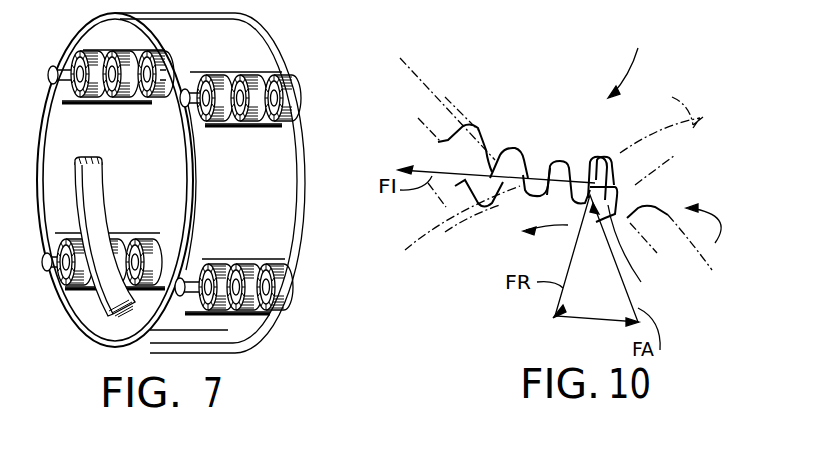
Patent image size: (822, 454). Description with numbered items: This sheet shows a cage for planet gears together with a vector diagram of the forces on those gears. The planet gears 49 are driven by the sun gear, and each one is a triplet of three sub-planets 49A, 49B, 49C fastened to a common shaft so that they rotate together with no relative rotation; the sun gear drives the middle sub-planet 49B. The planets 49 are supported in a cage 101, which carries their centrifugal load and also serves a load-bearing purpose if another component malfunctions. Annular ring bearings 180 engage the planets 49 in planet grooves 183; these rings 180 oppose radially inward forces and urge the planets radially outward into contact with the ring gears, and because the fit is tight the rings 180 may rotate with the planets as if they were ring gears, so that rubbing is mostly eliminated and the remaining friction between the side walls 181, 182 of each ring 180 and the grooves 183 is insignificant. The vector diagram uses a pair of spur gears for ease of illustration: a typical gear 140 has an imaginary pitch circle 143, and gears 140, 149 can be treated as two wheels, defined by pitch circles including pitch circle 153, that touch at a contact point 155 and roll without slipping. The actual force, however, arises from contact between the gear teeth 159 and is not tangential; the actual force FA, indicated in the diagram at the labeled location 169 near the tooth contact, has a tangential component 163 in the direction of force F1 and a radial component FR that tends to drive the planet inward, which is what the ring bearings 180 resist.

In FIG. 7, the planet gears 49 is at (280, 97).
In FIG. 7, the sub-planet 49A is at (217, 72).
In FIG. 7, the sub-planet 49B is at (258, 122).
In FIG. 7, the sub-planet 49C is at (283, 72).
In FIG. 7, the cage 101 is at (261, 216).
In FIG. 7, the annular ring bearings 180 is at (108, 300).
In FIG. 7, the side wall 181 is at (80, 208).
In FIG. 7, the side wall 182 is at (104, 186).
In FIG. 7, the planet grooves 183 is at (88, 110).
In FIG. 10, the gear 140 is at (703, 228).
In FIG. 10, the pitch circle 143 is at (712, 270).
In FIG. 10, the gear 149 is at (667, 157).
In FIG. 10, the pitch circle 153 is at (637, 79).
In FIG. 10, the contact point 155 is at (568, 190).
In FIG. 10, the gear teeth 159 is at (587, 163).
In FIG. 10, the tangential component 163 is at (608, 318).
In FIG. 10, the contact point 169 is at (641, 248).